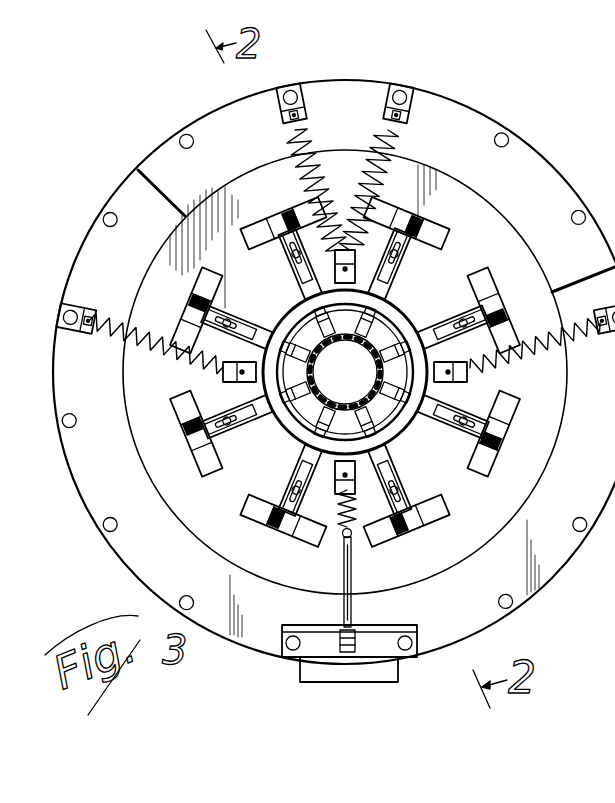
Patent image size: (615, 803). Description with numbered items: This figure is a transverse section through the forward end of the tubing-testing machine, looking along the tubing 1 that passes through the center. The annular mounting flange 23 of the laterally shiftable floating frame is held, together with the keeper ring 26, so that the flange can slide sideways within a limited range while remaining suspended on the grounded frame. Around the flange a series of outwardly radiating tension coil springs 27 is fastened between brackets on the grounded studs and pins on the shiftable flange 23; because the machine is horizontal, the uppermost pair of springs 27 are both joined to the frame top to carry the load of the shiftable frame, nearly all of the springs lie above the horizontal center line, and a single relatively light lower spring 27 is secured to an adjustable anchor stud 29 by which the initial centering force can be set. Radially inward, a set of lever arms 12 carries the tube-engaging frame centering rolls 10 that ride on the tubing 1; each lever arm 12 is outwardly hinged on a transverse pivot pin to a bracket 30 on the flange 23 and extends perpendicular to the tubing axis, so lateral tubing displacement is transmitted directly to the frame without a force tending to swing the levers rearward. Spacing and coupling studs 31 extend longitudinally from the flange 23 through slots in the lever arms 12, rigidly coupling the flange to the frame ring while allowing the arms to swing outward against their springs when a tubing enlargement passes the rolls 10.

The tubing 1 is at (345, 372).
The frame centering rolls 10 is at (371, 384).
The lever arms 12 is at (443, 331).
The annular mounting flange 23 is at (277, 553).
The keeper ring 26 is at (182, 557).
The tension coil springs 27 is at (545, 374).
The adjustable anchor stud 29 is at (352, 570).
The brackets 30 is at (247, 425).
The spacing and coupling studs 31 is at (296, 256).